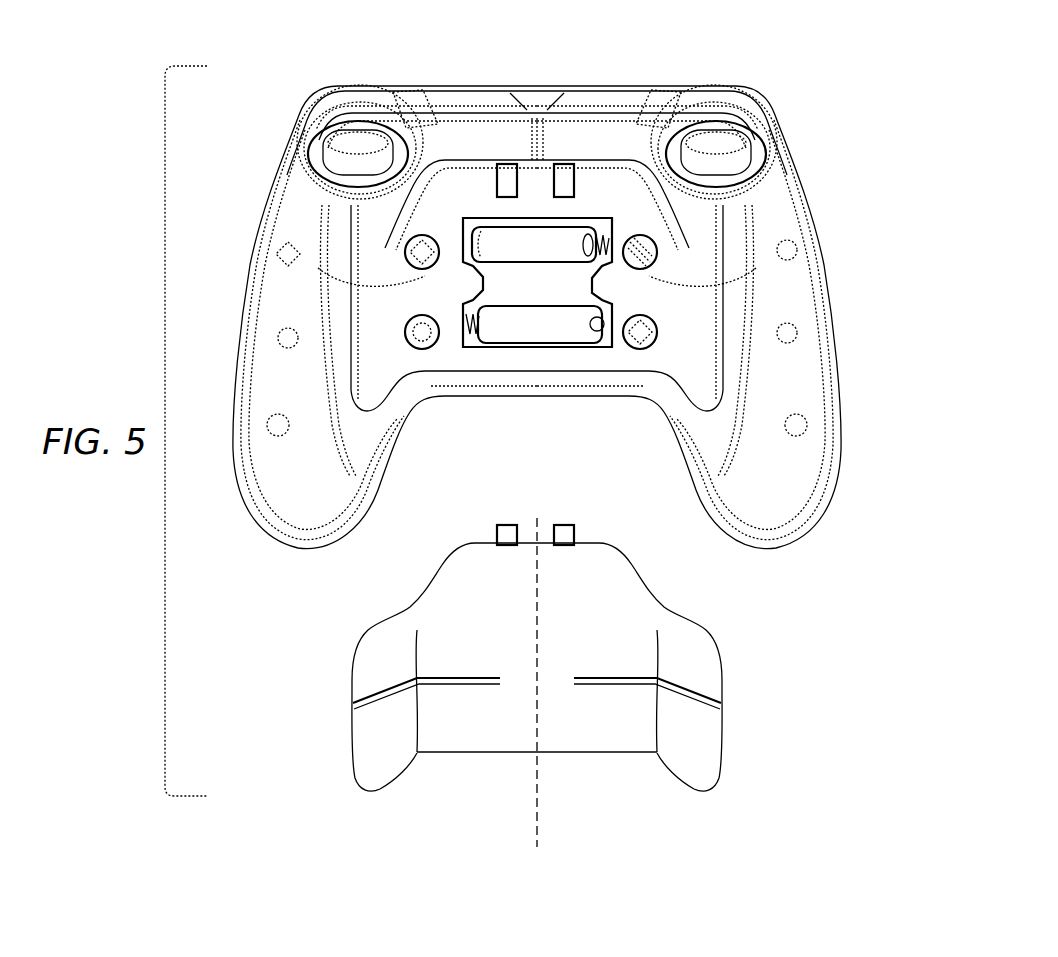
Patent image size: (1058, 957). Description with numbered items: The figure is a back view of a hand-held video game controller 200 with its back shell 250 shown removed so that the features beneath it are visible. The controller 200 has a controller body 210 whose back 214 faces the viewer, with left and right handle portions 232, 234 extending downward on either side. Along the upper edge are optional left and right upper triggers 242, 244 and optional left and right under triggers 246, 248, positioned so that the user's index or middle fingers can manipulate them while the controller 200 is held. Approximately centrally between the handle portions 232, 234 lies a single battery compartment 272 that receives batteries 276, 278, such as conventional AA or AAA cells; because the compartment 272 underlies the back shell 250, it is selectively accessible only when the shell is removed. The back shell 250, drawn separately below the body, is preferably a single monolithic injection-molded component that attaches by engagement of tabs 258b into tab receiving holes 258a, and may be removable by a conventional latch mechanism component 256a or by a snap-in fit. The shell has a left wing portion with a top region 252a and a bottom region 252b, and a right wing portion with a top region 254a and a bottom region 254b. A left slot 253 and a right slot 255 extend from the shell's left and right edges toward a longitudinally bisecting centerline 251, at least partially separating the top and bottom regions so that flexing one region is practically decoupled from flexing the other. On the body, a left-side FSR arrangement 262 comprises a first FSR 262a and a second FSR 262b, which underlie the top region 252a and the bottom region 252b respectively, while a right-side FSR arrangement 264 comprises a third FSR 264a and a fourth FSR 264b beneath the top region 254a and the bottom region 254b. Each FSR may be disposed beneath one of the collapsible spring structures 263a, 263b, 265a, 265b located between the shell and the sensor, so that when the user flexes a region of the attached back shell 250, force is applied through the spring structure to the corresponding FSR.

The hand-held video game controller 200 is at (811, 57).
The controller body 210 is at (590, 98).
The back 214 is at (466, 102).
The left handle portion 232 is at (790, 480).
The right handle portion 234 is at (278, 488).
The left upper trigger 242 is at (723, 110).
The right upper trigger 244 is at (347, 110).
The left under trigger 246 is at (727, 157).
The right under trigger 248 is at (347, 157).
The back shell 250 is at (520, 737).
The longitudinally bisecting centerline 251 is at (540, 823).
The top region of left wing portion 252a is at (684, 671).
The bottom region of left wing portion 252b is at (686, 733).
The left slot 253 is at (588, 676).
The top region of right wing portion 254a is at (390, 671).
The bottom region of right wing portion 254b is at (388, 733).
The right slot 255 is at (484, 676).
The latch mechanism component 256a is at (543, 398).
The tab receiving holes 258a is at (562, 172).
The tabs 258b is at (510, 527).
The right button cluster 262 is at (663, 282).
The first FSR 262a is at (657, 247).
The second FSR 262b is at (660, 325).
The collapsible spring structure 263a is at (657, 256).
The collapsible spring structure 263b is at (658, 332).
The left button cluster 264 is at (412, 281).
The third FSR 264a is at (403, 257).
The fourth FSR 264b is at (400, 345).
The collapsible spring structure 265a is at (407, 253).
The collapsible spring structure 265b is at (406, 324).
The battery compartment 272 is at (568, 290).
The battery 276 is at (513, 330).
The battery 278 is at (468, 234).